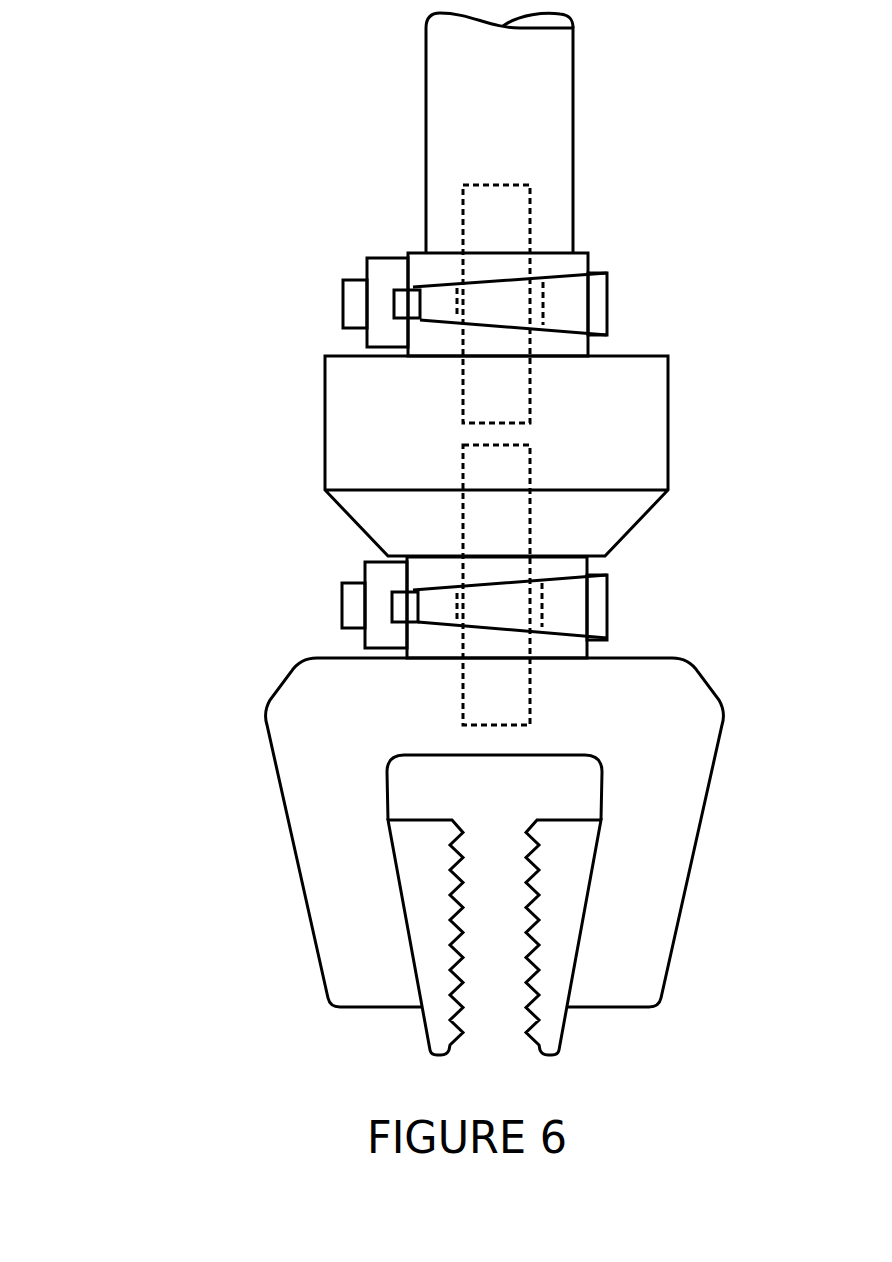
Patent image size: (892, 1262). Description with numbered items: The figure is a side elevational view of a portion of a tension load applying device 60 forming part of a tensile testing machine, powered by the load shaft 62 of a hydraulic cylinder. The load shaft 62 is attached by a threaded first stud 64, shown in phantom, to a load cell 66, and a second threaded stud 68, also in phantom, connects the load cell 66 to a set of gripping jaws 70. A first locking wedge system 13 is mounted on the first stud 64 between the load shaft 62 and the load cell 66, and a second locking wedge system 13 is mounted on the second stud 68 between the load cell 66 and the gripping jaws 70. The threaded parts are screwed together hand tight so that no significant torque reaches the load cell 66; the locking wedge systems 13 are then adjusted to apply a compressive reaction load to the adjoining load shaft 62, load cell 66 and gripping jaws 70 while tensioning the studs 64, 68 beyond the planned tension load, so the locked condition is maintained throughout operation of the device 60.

The tension load applying device 60 is at (300, 98).
The load shaft 62 is at (442, 133).
The threaded first stud 64 is at (463, 228).
The load cell 66 is at (357, 442).
The second threaded stud 68 is at (480, 508).
The locking wedge system 13 is at (338, 256).
The gripping jaws 70 is at (216, 763).